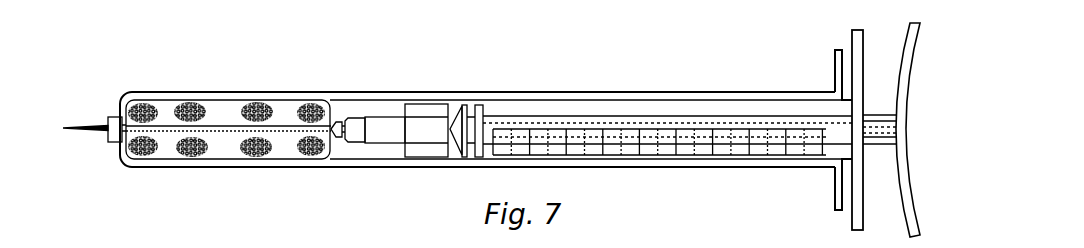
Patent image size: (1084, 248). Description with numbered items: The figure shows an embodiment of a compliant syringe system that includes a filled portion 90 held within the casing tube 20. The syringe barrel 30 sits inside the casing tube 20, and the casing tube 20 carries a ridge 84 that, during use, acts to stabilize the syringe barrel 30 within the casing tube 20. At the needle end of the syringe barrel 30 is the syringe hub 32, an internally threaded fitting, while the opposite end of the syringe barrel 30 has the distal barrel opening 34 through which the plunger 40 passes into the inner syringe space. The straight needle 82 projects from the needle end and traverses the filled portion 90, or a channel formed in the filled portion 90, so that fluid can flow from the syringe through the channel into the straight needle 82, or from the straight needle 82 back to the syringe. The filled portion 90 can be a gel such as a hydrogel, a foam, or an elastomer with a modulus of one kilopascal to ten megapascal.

The casing tube 20 is at (354, 170).
The syringe barrel 30 is at (637, 103).
The syringe hub 32 is at (427, 107).
The distal barrel opening 34 is at (863, 107).
The plunger 40 is at (877, 138).
The straight needle 82 is at (80, 123).
The ridge 84 is at (837, 188).
The filled portion 90 is at (203, 112).